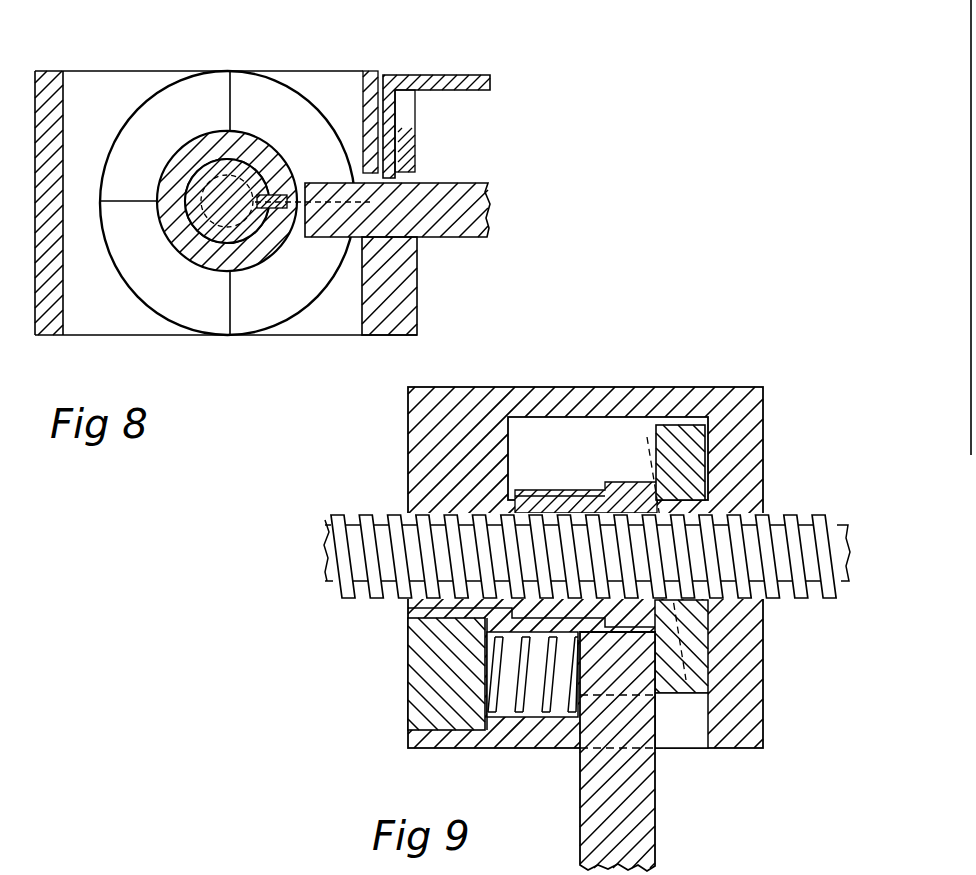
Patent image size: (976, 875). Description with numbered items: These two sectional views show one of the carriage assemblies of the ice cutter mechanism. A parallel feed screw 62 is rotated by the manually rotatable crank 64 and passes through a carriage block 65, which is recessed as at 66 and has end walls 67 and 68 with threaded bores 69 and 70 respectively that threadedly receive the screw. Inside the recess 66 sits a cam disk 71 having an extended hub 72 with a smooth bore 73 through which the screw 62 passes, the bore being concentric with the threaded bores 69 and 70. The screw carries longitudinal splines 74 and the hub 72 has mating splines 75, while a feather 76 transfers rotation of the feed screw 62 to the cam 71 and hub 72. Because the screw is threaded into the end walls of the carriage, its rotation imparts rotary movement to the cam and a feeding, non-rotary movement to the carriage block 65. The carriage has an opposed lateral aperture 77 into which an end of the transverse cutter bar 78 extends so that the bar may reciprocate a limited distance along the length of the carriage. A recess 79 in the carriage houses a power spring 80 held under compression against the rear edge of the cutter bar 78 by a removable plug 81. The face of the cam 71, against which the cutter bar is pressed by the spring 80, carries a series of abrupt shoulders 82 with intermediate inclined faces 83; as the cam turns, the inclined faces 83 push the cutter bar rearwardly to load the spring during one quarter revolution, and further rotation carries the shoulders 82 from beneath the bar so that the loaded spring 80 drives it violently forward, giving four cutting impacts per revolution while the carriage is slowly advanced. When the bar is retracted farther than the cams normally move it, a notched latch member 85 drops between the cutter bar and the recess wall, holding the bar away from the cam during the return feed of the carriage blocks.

In FIG. 8, the feed screw 62 is at (232, 230).
In FIG. 9, the feed screw 62 is at (820, 545).
In FIG. 8, the manually rotatable crank 64 is at (98, 313).
In FIG. 8, the carriage block 65 is at (417, 302).
In FIG. 9, the carriage block 65 is at (697, 408).
In FIG. 9, the recess 66 is at (569, 462).
In FIG. 9, the end wall 67 is at (763, 467).
In FIG. 9, the end wall 68 is at (410, 488).
In FIG. 9, the threaded bore 69 is at (762, 598).
In FIG. 9, the threaded bore 70 is at (400, 597).
In FIG. 8, the cam disk 71 is at (323, 93).
In FIG. 9, the cam disk 71 is at (708, 442).
In FIG. 8, the extended hub 72 is at (262, 252).
In FIG. 9, the extended hub 72 is at (520, 490).
In FIG. 8, the smooth bore 73 is at (210, 228).
In FIG. 9, the smooth bore 73 is at (515, 598).
In FIG. 8, the longitudinal spline 74 is at (256, 195).
In FIG. 8, the spline 75 is at (294, 172).
In FIG. 8, the feather 76 is at (305, 245).
In FIG. 9, the feather 76 is at (600, 490).
In FIG. 8, the lateral aperture 77 is at (437, 237).
In FIG. 9, the lateral aperture 77 is at (662, 725).
In FIG. 8, the cutter bar 78 is at (476, 184).
In FIG. 9, the cutter bar 78 is at (655, 830).
In FIG. 9, the recess 79 is at (505, 713).
In FIG. 9, the power spring 80 is at (517, 695).
In FIG. 9, the removable plug 81 is at (420, 713).
In FIG. 8, the abrupt shoulder 82 is at (245, 71).
In FIG. 8, the inclined face 83 is at (150, 135).
In FIG. 9, the inclined face 83 is at (645, 432).
In FIG. 8, the notched latch member 85 is at (437, 90).